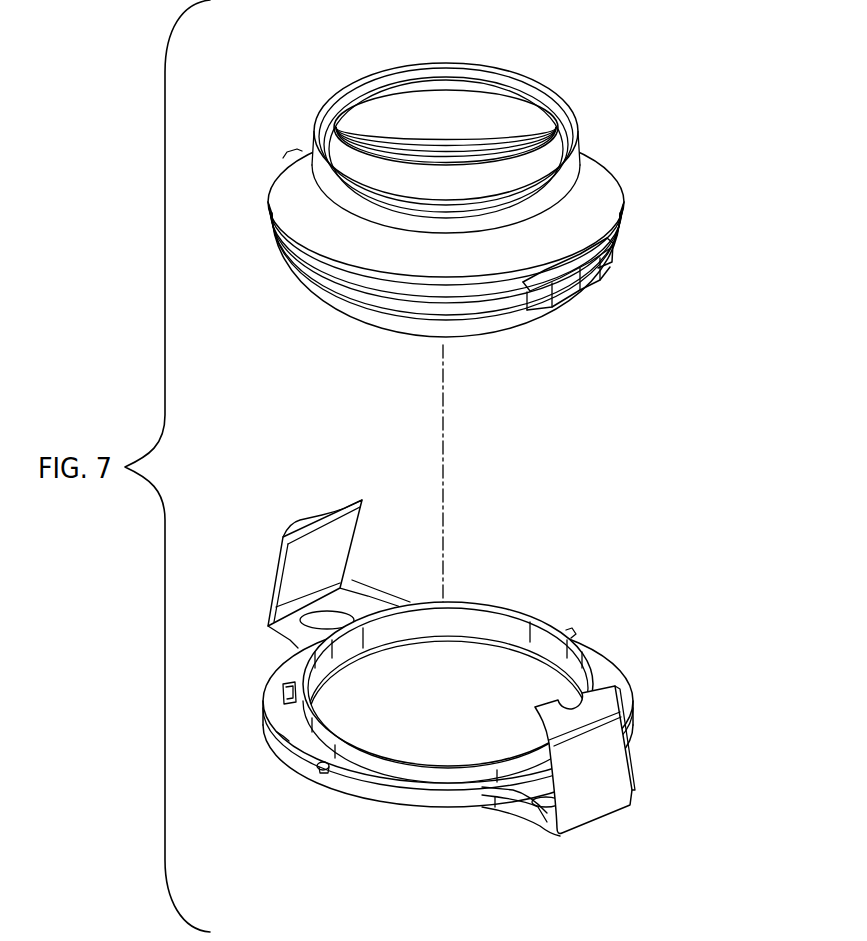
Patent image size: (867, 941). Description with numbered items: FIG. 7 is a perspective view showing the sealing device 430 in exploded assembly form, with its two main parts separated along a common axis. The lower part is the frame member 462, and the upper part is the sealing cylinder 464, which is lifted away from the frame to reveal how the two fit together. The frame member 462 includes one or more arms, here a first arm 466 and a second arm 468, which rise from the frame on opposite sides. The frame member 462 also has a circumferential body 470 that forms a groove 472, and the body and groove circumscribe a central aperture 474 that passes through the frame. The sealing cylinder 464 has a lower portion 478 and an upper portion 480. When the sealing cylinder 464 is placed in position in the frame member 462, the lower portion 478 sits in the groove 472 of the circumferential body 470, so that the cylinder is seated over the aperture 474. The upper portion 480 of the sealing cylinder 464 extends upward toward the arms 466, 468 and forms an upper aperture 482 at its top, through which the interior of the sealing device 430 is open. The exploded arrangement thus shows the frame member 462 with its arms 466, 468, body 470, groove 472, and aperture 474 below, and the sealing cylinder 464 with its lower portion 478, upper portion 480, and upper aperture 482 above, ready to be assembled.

The upper portion 480 is at (459, 202).
The upper aperture 482 is at (507, 128).
The sealing cylinder 464 is at (628, 196).
The lower portion 478 is at (583, 324).
The sealing device 430 is at (464, 653).
The frame member 462 is at (633, 690).
The aperture 474 is at (504, 688).
The first arm 466 is at (285, 565).
The second arm 468 is at (627, 757).
The groove 472 is at (285, 718).
The circumferential body 470 is at (322, 770).